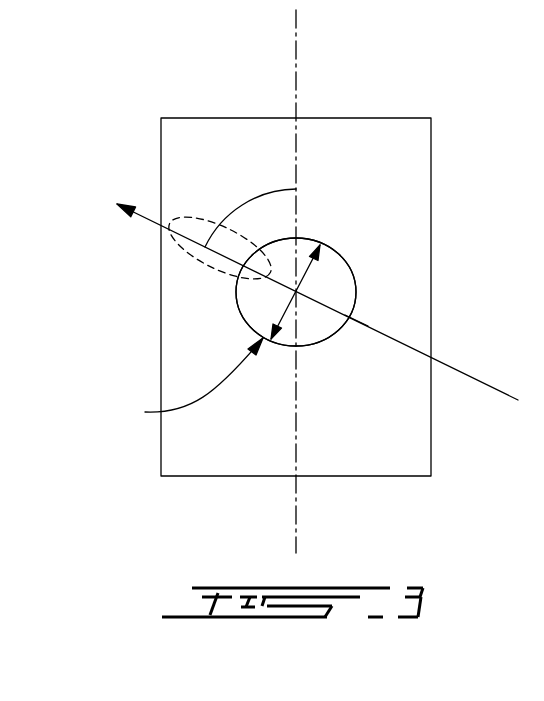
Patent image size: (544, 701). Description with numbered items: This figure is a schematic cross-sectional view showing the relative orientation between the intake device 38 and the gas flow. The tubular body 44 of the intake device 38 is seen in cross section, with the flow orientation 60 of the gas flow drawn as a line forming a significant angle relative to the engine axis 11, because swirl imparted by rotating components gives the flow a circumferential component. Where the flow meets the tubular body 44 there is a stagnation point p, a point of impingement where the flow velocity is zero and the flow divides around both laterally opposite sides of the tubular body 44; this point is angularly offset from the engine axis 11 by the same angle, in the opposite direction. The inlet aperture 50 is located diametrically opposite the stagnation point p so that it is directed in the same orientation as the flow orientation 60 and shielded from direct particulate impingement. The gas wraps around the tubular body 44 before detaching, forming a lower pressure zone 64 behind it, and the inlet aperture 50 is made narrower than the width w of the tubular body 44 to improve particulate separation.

The engine axis 11 is at (296, 50).
The lower pressure zone 64 is at (188, 214).
The flow orientation 60 is at (320, 302).
The tubular body 44 is at (245, 322).
The inlet aperture 50 is at (243, 284).
The intake device 38 is at (189, 384).
The width of the tubular body w is at (313, 275).
The stagnation point p is at (362, 314).